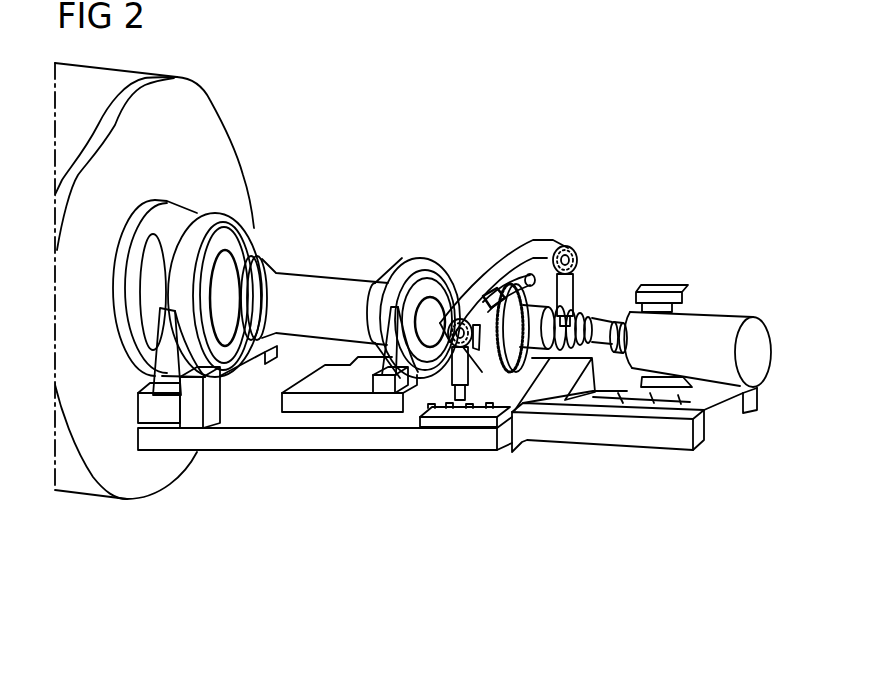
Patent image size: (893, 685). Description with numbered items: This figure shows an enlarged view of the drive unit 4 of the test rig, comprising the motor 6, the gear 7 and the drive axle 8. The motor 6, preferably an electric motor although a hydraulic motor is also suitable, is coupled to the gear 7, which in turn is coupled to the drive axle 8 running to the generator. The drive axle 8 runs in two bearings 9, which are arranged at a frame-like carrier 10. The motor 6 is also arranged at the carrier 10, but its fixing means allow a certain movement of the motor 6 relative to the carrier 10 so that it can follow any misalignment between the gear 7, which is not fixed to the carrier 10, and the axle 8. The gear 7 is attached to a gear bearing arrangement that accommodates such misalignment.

The drive unit 4 is at (553, 140).
The motor 6 is at (712, 328).
The gear 7 is at (530, 335).
The drive axle 8 is at (325, 289).
The bearings 9 is at (212, 223).
The frame-like carrier 10 is at (307, 443).